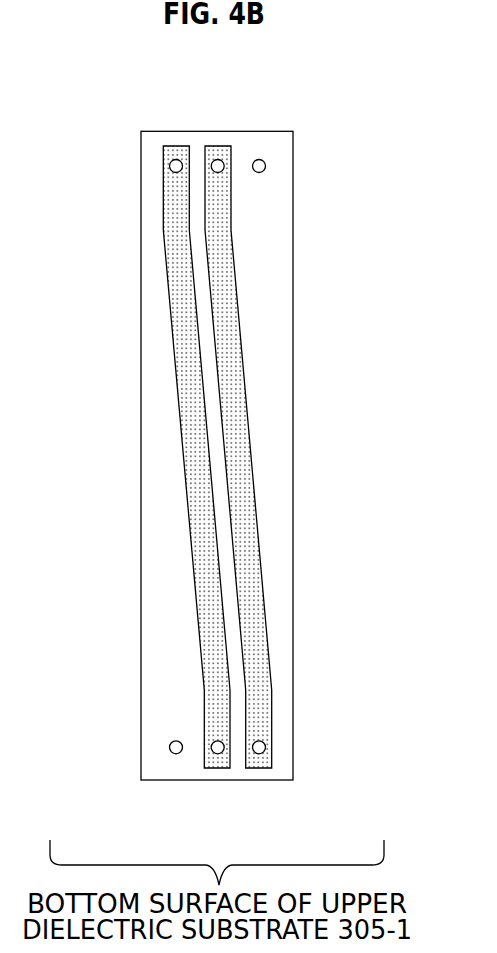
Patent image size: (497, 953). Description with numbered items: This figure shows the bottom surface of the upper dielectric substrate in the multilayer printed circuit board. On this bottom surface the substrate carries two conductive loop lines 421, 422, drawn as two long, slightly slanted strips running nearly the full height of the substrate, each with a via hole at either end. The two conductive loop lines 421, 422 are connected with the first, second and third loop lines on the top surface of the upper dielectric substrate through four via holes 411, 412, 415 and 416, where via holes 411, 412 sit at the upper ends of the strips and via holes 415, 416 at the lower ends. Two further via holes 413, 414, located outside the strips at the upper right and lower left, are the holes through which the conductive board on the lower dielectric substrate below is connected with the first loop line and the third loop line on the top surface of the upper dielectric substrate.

The via hole 411 is at (176, 160).
The via hole 412 is at (212, 162).
The via hole 413 is at (260, 160).
The via hole 414 is at (176, 754).
The via hole 415 is at (218, 754).
The via hole 416 is at (259, 754).
The conductive loop line 421 is at (190, 385).
The conductive loop line 422 is at (240, 477).